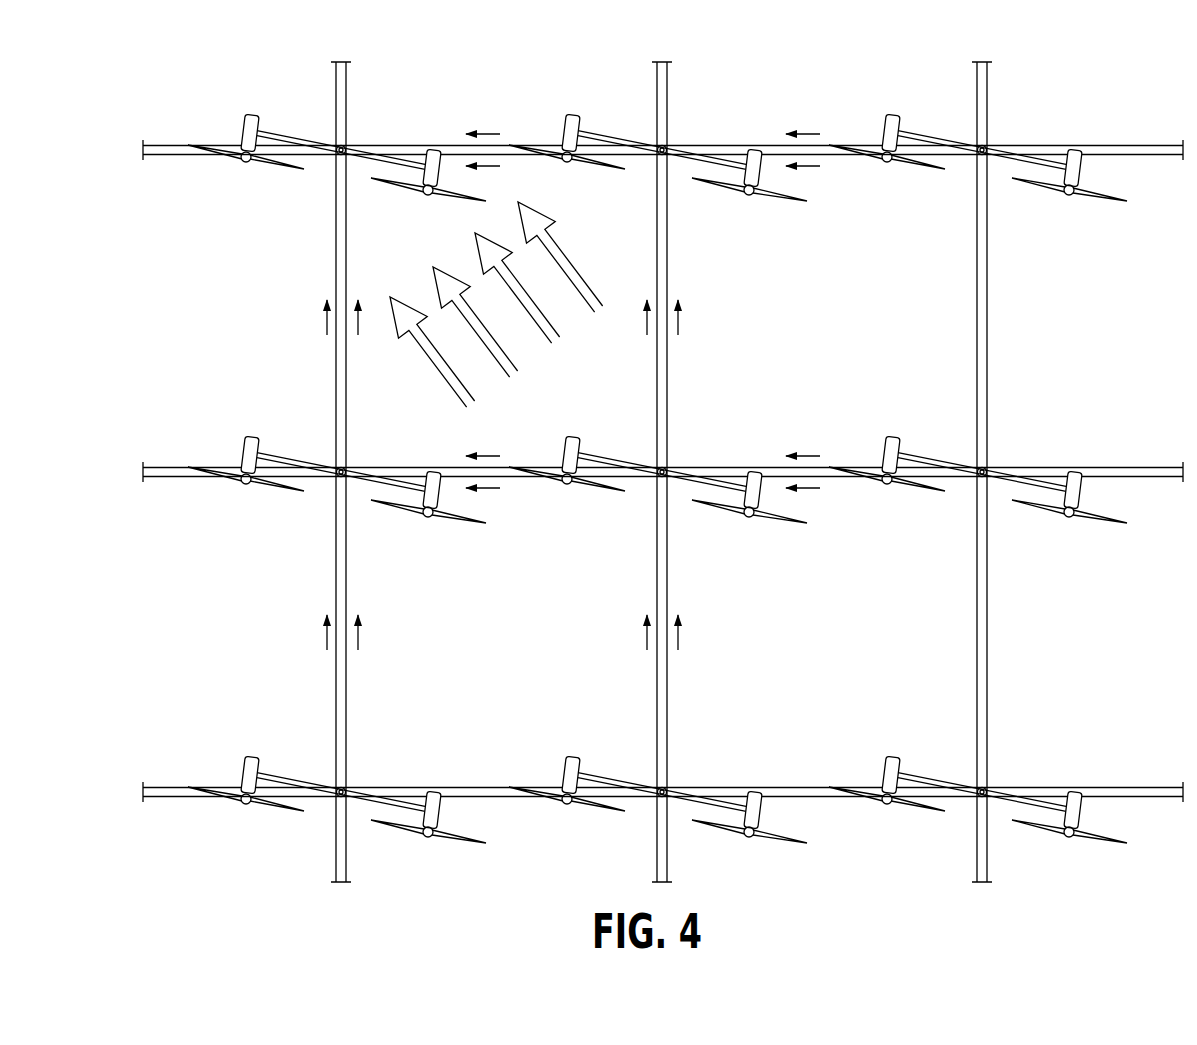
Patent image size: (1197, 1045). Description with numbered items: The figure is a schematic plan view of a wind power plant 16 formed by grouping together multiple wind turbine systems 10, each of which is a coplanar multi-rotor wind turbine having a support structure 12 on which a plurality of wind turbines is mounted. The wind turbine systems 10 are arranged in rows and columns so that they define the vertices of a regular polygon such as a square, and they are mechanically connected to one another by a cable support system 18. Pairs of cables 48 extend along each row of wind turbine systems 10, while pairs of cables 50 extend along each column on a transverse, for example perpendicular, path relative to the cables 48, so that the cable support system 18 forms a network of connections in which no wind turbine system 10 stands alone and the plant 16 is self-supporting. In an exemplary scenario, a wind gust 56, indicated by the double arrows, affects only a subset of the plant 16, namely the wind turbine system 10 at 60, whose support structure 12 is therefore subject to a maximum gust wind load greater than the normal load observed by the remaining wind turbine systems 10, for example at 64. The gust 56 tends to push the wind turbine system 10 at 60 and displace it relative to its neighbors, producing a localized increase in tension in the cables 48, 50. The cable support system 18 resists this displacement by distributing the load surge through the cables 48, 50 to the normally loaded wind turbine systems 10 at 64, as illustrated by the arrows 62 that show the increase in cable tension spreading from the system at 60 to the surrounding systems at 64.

The wind power plant 16 is at (175, 81).
The wind turbine system 10 is at (681, 133).
The support structure 12 is at (337, 145).
The cable support system 18 is at (993, 320).
The cable 48 is at (1153, 145).
The cable 50 is at (336, 853).
The wind gust 56 is at (574, 263).
The wind turbine system location subject to gust 60 is at (358, 133).
The arrows indicating cable tension increase 62 is at (488, 134).
The normally loaded wind turbine system location 64 is at (999, 133).